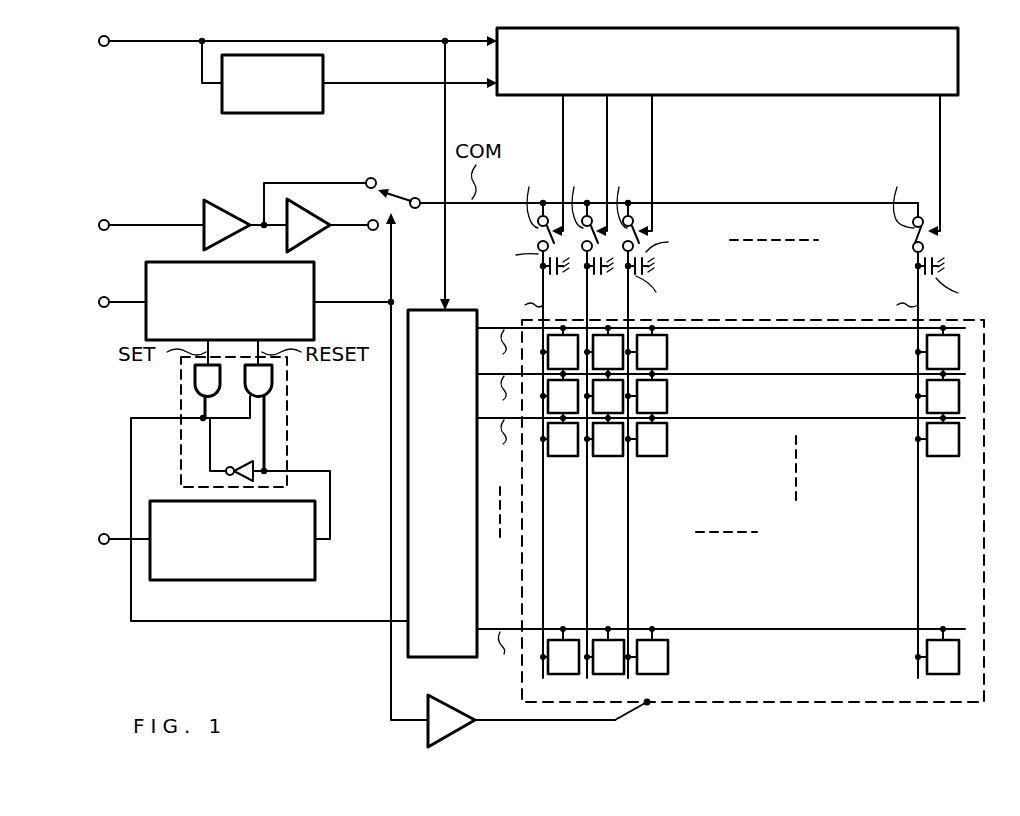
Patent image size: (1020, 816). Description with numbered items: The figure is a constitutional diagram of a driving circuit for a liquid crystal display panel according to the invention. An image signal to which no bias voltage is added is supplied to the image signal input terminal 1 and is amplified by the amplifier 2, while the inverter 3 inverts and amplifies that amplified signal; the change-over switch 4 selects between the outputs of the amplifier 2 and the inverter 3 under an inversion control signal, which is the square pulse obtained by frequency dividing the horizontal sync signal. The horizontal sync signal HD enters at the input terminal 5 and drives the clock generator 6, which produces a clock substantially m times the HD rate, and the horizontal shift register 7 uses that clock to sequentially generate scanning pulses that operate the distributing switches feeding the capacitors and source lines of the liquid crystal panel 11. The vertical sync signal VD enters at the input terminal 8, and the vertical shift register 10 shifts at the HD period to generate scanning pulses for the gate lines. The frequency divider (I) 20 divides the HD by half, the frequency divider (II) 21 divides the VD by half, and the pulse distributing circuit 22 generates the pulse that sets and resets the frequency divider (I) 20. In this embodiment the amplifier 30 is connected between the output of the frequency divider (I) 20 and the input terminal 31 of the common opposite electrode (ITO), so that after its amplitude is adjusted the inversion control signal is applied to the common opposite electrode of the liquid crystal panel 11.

The image signal input terminal 1 is at (104, 219).
The amplifier 2 is at (218, 201).
The inverter 3 is at (318, 211).
The change-over switch 4 is at (404, 193).
The horizontal sync signal (HD) input terminal 5 is at (104, 47).
The clock generator 6 is at (324, 62).
The horizontal shift register 7 is at (959, 62).
The vertical sync signal (VD) input terminal 8 is at (104, 533).
The vertical shift register 10 is at (408, 455).
The liquid crystal panel 11 is at (810, 704).
The frequency divider (I) 20 is at (316, 283).
The frequency divider (II) 21 is at (316, 562).
The pulse distributing circuit 22 is at (288, 405).
The amplifier 30 is at (460, 733).
The input terminal of the common opposite electrode 31 is at (650, 707).